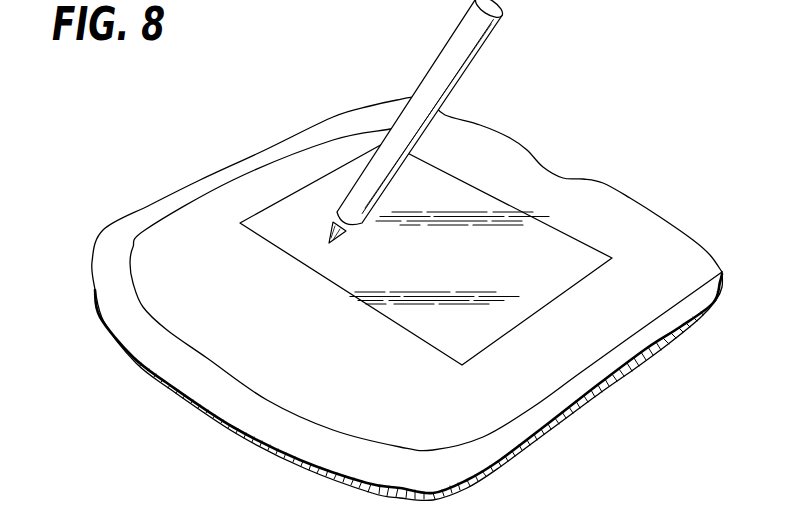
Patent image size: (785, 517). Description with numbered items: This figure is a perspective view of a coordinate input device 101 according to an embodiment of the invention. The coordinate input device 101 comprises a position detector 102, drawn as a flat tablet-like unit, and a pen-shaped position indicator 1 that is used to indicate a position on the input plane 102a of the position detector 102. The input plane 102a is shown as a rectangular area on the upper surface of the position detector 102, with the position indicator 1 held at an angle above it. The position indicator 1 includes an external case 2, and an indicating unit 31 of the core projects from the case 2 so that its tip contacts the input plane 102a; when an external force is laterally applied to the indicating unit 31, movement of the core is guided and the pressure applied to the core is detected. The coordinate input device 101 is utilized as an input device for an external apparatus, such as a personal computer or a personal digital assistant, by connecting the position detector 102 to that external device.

The position indicator 1 is at (449, 183).
The external case 2 is at (427, 88).
The indicating unit 31 is at (338, 245).
The coordinate input device 101 is at (407, 275).
The position detector 102 is at (513, 390).
The input plane 102a is at (553, 285).